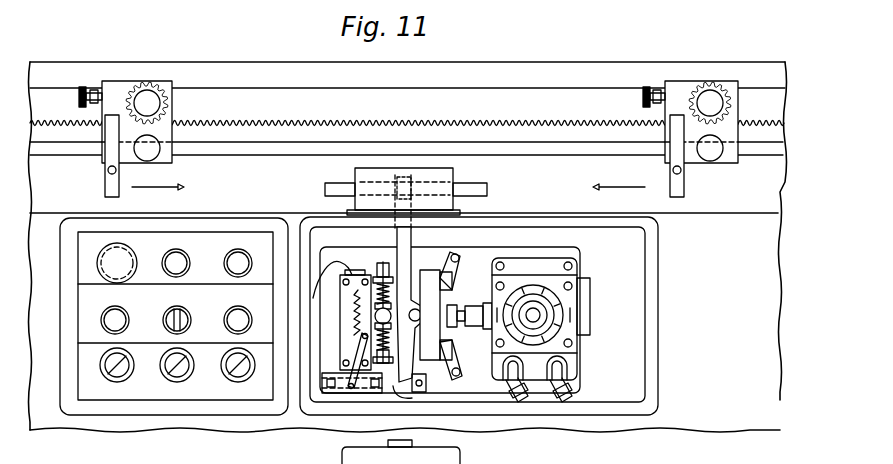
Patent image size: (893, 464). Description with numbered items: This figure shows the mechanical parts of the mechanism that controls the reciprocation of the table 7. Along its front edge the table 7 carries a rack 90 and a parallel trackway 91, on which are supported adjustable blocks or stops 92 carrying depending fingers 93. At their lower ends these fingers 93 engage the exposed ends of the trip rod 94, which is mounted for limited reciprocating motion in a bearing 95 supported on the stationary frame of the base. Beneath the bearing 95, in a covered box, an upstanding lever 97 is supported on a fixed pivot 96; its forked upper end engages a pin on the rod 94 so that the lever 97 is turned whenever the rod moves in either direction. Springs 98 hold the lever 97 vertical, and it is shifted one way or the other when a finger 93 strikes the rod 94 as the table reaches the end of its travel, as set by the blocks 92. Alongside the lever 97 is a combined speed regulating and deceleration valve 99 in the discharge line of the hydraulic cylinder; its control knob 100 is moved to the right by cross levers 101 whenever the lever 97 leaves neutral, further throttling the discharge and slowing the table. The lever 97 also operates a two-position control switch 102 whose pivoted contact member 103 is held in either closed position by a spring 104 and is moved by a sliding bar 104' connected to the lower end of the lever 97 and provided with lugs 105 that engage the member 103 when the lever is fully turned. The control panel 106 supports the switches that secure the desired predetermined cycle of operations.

The table 7 is at (643, 60).
The rack 90 is at (603, 122).
The trackway 91 is at (563, 152).
The adjustable blocks or stops 92 is at (145, 81).
The depending fingers 93 is at (105, 186).
The trip rod 94 is at (482, 183).
The bearing 95 is at (355, 171).
The fixed pivot 96 is at (421, 316).
The upstanding lever 97 is at (412, 238).
The springs 98 is at (389, 286).
The combined speed regulating and deceleration valve 99 is at (578, 273).
The control knob 100 is at (460, 325).
The cross levers 101 is at (460, 262).
The control switch 102 is at (352, 328).
The pivoted contact member 103 is at (356, 352).
The spring 104 is at (332, 287).
The sliding bar 104' is at (430, 390).
The lugs 105 is at (374, 388).
The control panel 106 is at (143, 396).